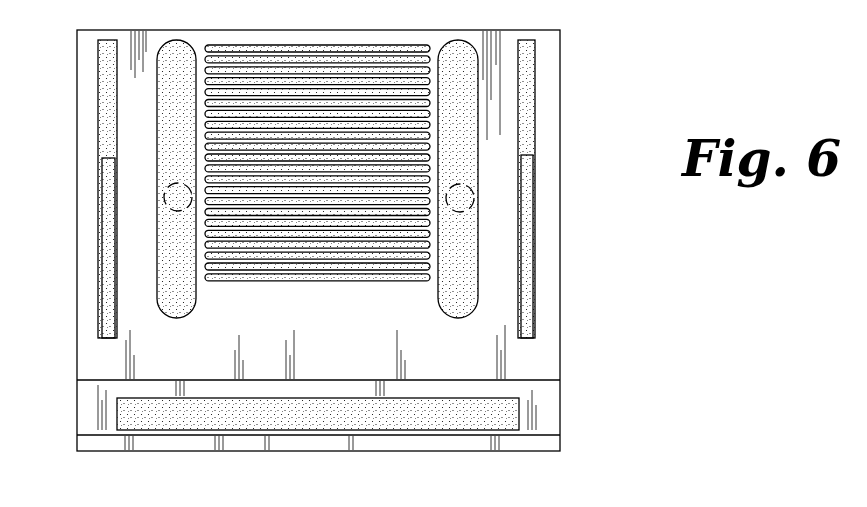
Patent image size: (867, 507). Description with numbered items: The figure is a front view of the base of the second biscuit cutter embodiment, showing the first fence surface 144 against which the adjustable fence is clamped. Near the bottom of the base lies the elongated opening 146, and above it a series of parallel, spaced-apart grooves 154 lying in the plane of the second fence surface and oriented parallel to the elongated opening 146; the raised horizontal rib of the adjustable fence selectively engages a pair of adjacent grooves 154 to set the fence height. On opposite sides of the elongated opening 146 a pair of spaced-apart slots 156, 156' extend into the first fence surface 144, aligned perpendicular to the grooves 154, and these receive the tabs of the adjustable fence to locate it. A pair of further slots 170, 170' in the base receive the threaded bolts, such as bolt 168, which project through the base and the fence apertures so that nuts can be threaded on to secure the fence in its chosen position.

The first fence surface 144 is at (364, 335).
The elongated opening 146 is at (448, 411).
The grooves 154 is at (228, 258).
The slot 156 is at (584, 189).
The slot 156' is at (62, 189).
The bolt 168 is at (462, 212).
The slot 170 is at (544, 179).
The slot 170' is at (101, 179).